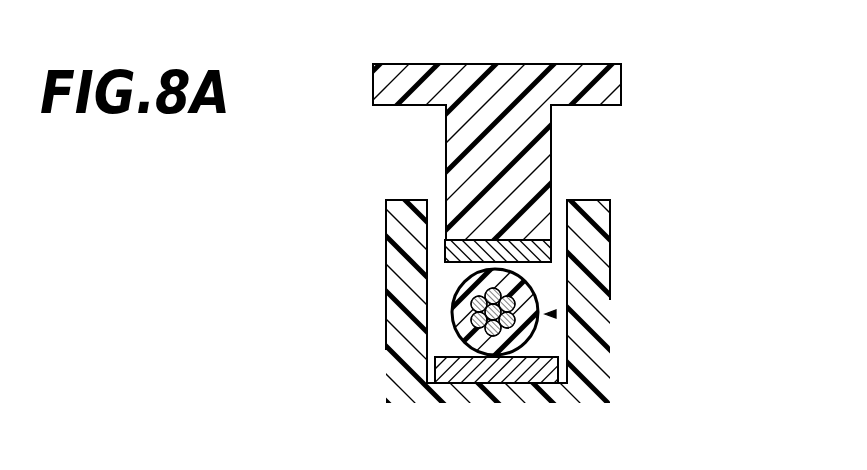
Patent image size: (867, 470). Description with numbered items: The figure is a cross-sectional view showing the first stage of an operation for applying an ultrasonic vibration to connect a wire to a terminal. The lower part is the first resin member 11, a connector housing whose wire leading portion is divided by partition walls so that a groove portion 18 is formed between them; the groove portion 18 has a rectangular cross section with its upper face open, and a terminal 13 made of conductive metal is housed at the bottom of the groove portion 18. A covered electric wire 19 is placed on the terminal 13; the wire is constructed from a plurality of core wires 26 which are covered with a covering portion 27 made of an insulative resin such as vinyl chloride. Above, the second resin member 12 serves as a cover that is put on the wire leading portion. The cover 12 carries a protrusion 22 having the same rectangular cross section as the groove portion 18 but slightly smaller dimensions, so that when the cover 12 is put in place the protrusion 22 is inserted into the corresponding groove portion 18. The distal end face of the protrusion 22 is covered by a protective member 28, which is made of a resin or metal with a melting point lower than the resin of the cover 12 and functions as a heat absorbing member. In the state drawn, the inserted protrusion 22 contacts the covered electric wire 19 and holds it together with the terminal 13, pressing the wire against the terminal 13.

The first resin member 11 is at (477, 395).
The second resin member 12 is at (402, 77).
The terminal 13 is at (541, 378).
The groove portion 18 is at (555, 338).
The covered electric wire 19 is at (545, 314).
The protrusion 22 is at (553, 157).
The core wires 26 is at (465, 322).
The covering portion 27 is at (460, 301).
The protective member 28 is at (553, 247).